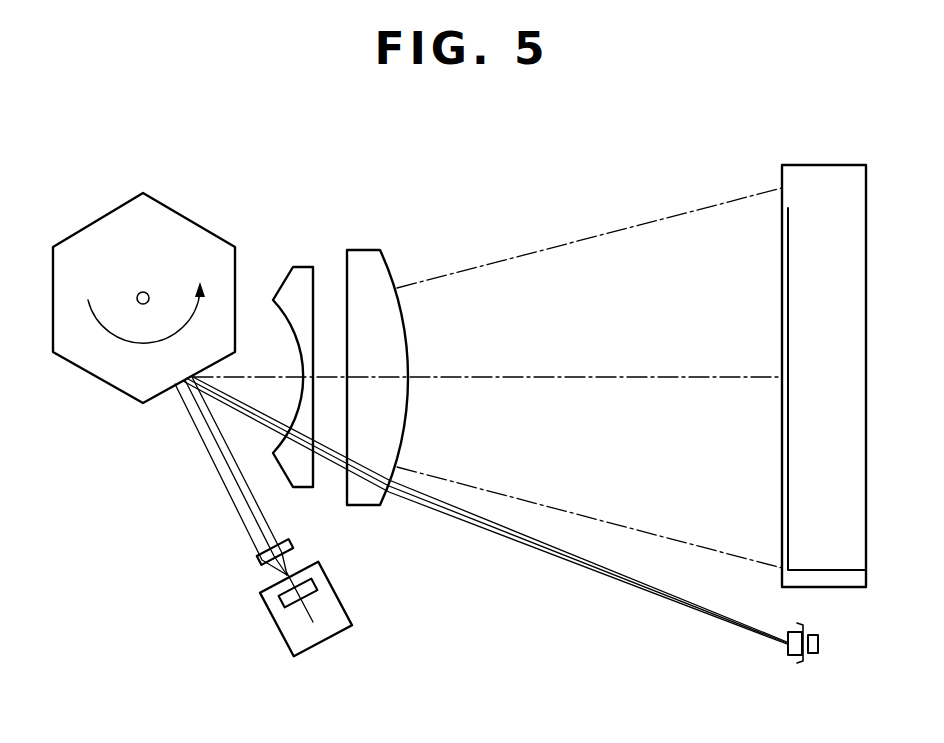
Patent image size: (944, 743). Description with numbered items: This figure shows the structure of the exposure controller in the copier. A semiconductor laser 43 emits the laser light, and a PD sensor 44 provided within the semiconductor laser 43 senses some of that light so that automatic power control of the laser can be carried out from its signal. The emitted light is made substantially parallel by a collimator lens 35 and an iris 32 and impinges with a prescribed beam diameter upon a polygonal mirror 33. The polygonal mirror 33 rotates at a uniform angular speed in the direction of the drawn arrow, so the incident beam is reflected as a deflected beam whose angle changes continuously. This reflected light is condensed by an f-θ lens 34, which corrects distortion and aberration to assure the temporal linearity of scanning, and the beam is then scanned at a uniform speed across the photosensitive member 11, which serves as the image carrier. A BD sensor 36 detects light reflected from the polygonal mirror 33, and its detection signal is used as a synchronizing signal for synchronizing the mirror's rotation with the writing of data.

The photosensitive member 11 is at (846, 165).
The iris 32 is at (308, 512).
The polygonal mirror 33 is at (106, 217).
The f-θ lens 34 is at (263, 233).
The collimator lens 35 is at (259, 566).
The BD sensor 36 is at (790, 657).
The semiconductor laser 43 is at (352, 614).
The PD sensor 44 is at (316, 581).